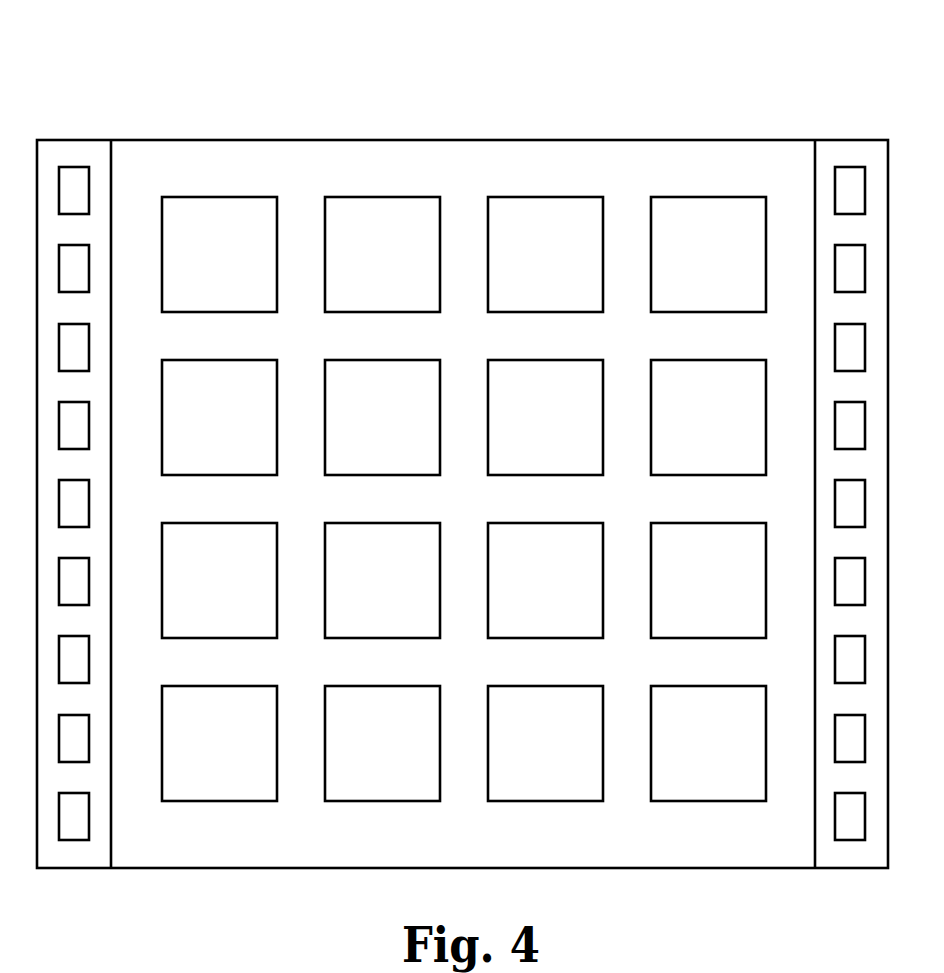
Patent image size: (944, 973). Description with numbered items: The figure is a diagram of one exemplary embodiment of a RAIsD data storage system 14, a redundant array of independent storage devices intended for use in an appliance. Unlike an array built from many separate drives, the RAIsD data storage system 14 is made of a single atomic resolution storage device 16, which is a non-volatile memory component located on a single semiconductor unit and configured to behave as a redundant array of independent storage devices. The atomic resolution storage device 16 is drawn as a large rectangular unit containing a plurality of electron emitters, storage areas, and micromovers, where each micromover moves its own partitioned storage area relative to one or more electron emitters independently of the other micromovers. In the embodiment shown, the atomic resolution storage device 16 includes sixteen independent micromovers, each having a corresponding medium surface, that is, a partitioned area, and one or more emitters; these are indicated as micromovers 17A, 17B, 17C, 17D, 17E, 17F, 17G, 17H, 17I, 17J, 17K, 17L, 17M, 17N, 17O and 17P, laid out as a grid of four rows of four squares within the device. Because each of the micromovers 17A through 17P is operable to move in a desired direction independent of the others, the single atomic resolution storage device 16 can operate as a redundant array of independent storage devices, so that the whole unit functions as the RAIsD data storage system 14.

The RAIsD data storage system 14 is at (214, 84).
The atomic resolution storage device 16 is at (450, 140).
The micromover 17A is at (233, 197).
The micromover 17B is at (396, 197).
The micromover 17C is at (559, 197).
The micromover 17D is at (722, 197).
The micromover 17E is at (233, 360).
The micromover 17F is at (396, 360).
The micromover 17G is at (559, 360).
The micromover 17H is at (722, 360).
The micromover 17I is at (233, 523).
The micromover 17J is at (396, 523).
The micromover 17K is at (559, 523).
The micromover 17L is at (722, 523).
The micromover 17M is at (233, 686).
The micromover 17N is at (396, 686).
The micromover 17O is at (559, 686).
The micromover 17P is at (722, 686).